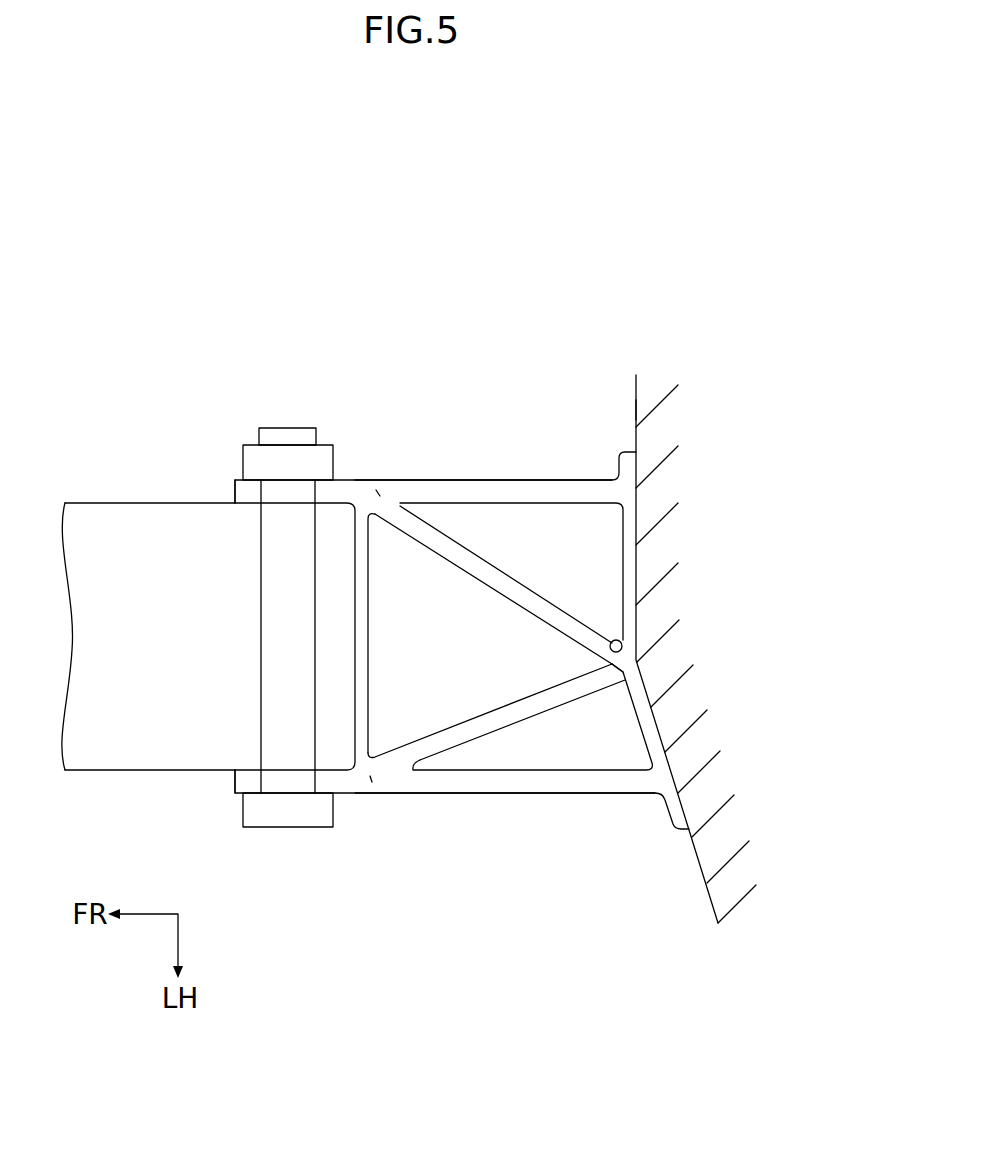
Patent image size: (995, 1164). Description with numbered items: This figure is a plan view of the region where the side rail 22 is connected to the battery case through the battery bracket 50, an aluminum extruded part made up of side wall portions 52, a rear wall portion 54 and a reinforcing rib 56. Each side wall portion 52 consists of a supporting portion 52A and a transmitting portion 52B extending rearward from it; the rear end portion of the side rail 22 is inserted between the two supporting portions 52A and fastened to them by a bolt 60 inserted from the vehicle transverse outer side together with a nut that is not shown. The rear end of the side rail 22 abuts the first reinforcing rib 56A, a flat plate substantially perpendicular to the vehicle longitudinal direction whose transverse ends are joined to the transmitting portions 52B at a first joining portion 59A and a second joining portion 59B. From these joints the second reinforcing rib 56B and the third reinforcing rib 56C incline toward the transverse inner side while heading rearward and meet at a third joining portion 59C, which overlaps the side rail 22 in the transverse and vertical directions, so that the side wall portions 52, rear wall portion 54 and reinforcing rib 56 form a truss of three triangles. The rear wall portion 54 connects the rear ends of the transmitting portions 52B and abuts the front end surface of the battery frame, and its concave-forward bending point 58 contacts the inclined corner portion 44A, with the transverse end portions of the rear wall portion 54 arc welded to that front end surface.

The side rail 22 is at (95, 776).
The corner portion 44A is at (636, 407).
The battery bracket 50 is at (452, 832).
The side wall portion 52 is at (436, 455).
The supporting portion 52A is at (235, 491).
The transmitting portion 52B is at (487, 479).
The rear wall portion 54 is at (636, 558).
The reinforcing rib 56 is at (496, 634).
The first reinforcing rib 56A is at (370, 628).
The second reinforcing rib 56B is at (545, 712).
The third reinforcing rib 56C is at (524, 580).
The bending point 58 is at (607, 664).
The first joining portion 59A is at (371, 778).
The second joining portion 59B is at (380, 493).
The third joining portion 59C is at (623, 641).
The bolt 60 is at (287, 830).